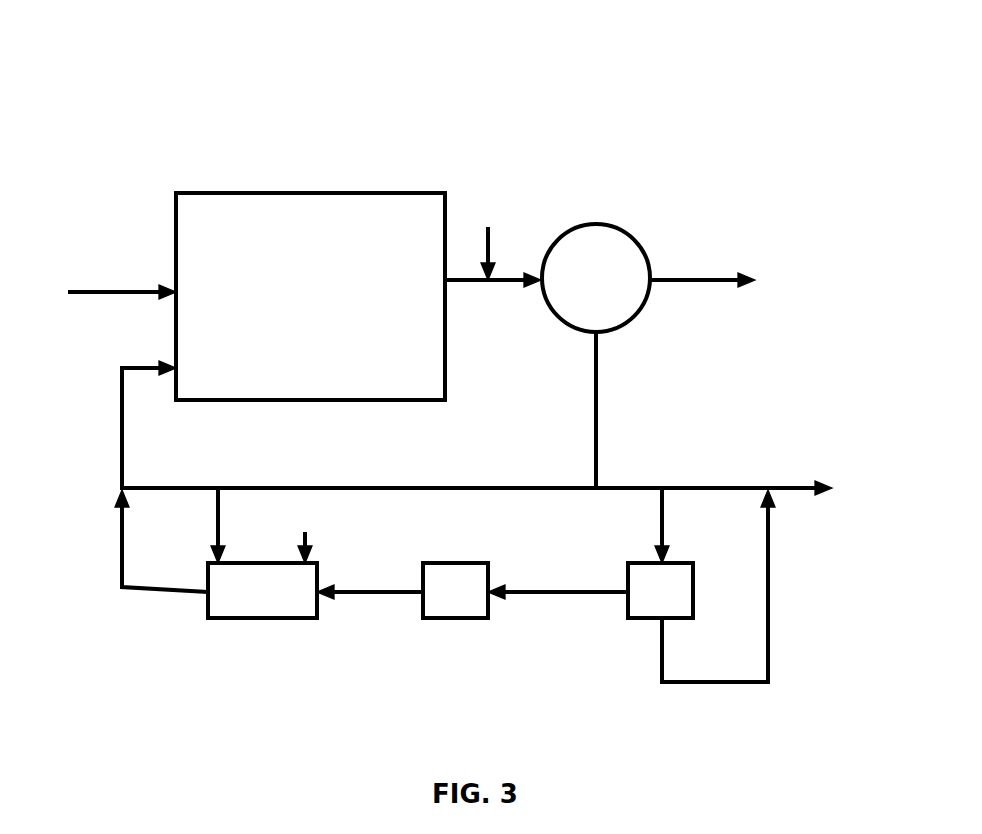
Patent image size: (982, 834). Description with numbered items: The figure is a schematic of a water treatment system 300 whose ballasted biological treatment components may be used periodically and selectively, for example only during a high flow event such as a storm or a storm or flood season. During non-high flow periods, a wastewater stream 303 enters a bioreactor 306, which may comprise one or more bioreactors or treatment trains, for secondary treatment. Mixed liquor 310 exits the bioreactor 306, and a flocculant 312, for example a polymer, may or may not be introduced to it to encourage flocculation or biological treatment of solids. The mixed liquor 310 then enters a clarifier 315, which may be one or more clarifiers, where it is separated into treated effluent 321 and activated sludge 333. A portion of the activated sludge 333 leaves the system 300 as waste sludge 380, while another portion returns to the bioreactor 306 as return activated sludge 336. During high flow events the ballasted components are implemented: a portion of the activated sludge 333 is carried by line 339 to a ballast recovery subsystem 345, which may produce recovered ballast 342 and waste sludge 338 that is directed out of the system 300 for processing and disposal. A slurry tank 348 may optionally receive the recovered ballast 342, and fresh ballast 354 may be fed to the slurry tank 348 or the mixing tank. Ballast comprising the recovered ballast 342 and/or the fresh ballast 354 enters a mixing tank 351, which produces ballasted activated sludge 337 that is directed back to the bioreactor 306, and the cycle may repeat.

The water treatment system 300 is at (728, 138).
The wastewater stream 303 is at (119, 288).
The bioreactor 306 is at (310, 296).
The mixed liquor 310 is at (477, 282).
The flocculant 312 is at (493, 240).
The clarifier 315 is at (633, 233).
The treated effluent 321 is at (685, 277).
The activated sludge 333 is at (598, 430).
The return activated sludge 336 is at (428, 483).
The ballasted activated sludge 337 is at (153, 588).
The waste sludge 338 is at (770, 637).
The inlet line 339 is at (665, 530).
The recovered ballast 342 is at (565, 585).
The ballast recovery subsystem 345 is at (682, 618).
The slurry tank 348 is at (455, 618).
The mixing tank 351 is at (273, 618).
The fresh ballast 354 is at (313, 543).
The waste sludge 380 is at (780, 485).